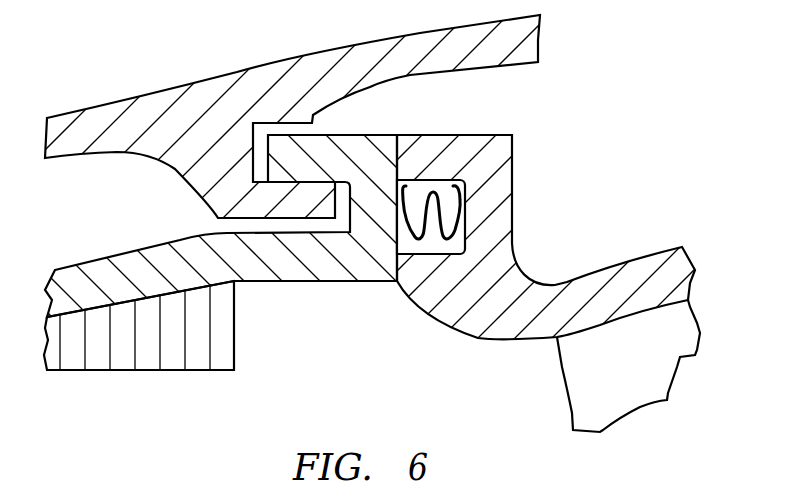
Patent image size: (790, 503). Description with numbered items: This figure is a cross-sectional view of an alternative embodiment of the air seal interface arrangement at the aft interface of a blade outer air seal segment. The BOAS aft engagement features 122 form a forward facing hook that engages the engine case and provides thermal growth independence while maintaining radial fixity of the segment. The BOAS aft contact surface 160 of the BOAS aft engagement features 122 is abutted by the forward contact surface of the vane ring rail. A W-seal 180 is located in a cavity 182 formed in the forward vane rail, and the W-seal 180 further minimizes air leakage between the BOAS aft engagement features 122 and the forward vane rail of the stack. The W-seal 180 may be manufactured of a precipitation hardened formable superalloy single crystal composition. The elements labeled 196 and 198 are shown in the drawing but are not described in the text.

The BOAS aft engagement feature 122 is at (322, 285).
The BOAS aft contact surface 160 is at (417, 255).
The W-seal 180 is at (472, 175).
The cavity 182 is at (460, 254).
The seal land surface 196 is at (455, 158).
The carrier flange 198 is at (397, 158).